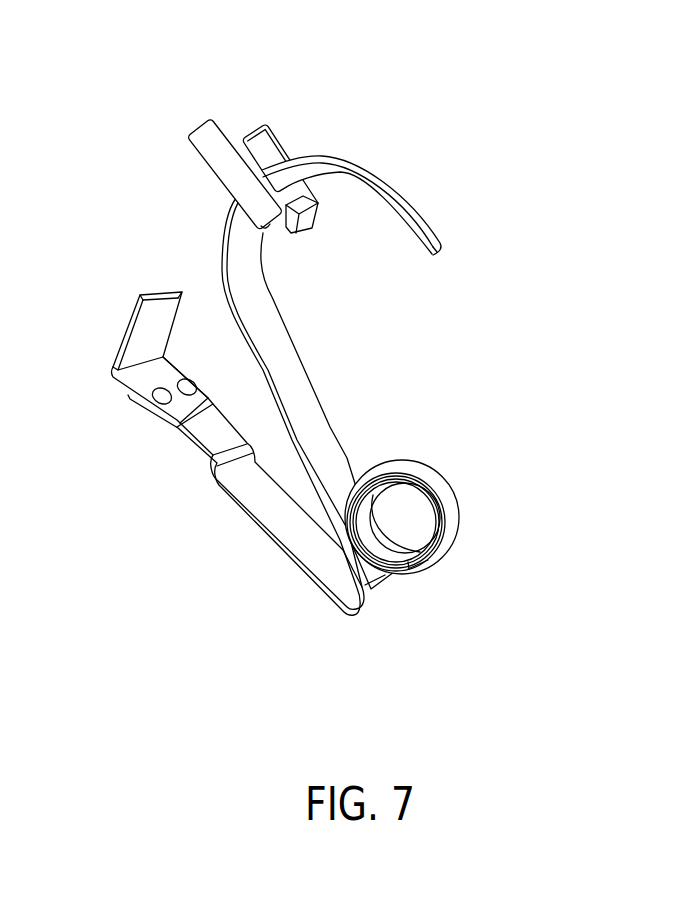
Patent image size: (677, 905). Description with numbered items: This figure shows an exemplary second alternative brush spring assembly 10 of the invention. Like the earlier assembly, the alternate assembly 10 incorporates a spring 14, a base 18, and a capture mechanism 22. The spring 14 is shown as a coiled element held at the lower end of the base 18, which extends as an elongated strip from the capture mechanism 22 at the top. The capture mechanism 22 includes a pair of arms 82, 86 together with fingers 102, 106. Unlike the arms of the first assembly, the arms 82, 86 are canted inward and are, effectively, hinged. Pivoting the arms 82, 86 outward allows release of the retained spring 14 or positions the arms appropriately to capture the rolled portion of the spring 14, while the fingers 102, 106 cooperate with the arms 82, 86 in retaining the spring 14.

The brush spring assembly 10 is at (588, 231).
The spring 14 is at (450, 493).
The base 18 is at (334, 430).
The capture mechanism 22 is at (418, 126).
The arm 82 is at (280, 127).
The arm 86 is at (205, 117).
The finger 102 is at (311, 216).
The finger 106 is at (275, 226).